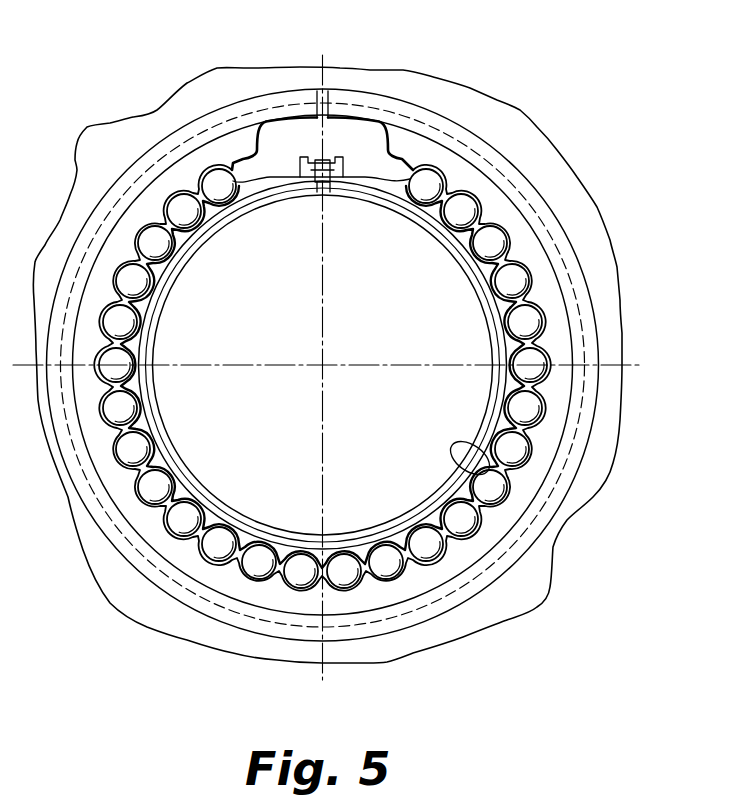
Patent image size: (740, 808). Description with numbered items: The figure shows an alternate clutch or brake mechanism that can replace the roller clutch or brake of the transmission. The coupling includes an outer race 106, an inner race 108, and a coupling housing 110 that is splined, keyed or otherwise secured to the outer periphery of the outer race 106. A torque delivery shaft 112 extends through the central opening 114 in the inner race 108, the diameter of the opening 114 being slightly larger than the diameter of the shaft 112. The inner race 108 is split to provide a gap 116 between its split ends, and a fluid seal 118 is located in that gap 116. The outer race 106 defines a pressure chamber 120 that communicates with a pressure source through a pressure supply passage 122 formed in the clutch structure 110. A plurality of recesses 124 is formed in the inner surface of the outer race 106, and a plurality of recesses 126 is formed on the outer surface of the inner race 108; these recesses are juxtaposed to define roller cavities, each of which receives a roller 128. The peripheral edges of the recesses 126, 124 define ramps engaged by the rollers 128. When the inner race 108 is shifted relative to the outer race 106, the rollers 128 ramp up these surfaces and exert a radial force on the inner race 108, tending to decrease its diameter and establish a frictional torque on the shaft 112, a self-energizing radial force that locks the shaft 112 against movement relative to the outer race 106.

The outer race 106 is at (530, 253).
The inner race 108 is at (512, 347).
The coupling housing 110 is at (515, 143).
The torque delivery shaft 112 is at (458, 407).
The central opening 114 is at (457, 463).
The gap 116 is at (325, 160).
The fluid seal 118 is at (333, 182).
The pressure chamber 120 is at (387, 134).
The pressure supply passage 122 is at (317, 92).
The recesses 124 is at (475, 200).
The recesses 126 is at (477, 253).
The roller 128 is at (510, 448).